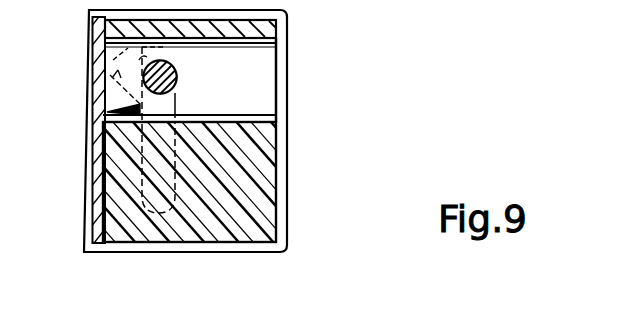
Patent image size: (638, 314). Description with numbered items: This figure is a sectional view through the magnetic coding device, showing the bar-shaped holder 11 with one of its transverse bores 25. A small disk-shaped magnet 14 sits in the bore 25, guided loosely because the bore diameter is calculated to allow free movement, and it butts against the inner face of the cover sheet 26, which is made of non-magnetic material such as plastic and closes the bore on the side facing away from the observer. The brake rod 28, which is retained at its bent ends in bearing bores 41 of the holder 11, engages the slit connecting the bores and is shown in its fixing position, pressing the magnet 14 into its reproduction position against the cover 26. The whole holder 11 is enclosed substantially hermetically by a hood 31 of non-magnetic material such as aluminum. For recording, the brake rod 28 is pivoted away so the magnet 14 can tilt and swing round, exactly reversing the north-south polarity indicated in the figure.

The holder 11 is at (269, 213).
The magnet 14 is at (92, 59).
The bore 25 is at (261, 73).
The cover sheet 26 is at (89, 150).
The brake rod 28 is at (176, 81).
The hood 31 is at (287, 154).
The bearing bore 41 is at (137, 204).